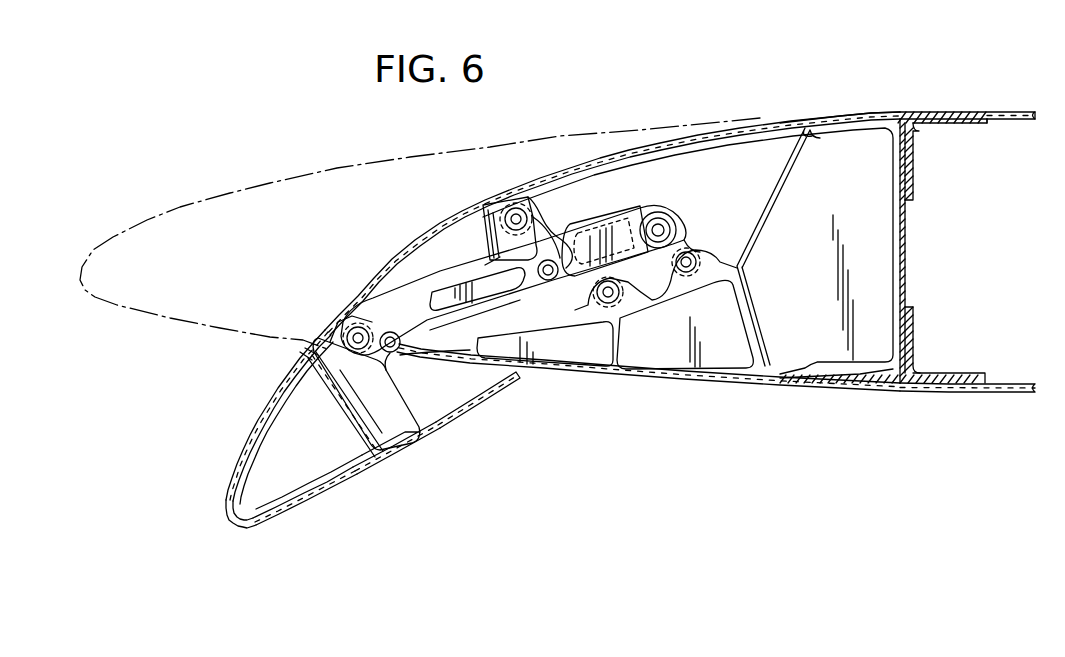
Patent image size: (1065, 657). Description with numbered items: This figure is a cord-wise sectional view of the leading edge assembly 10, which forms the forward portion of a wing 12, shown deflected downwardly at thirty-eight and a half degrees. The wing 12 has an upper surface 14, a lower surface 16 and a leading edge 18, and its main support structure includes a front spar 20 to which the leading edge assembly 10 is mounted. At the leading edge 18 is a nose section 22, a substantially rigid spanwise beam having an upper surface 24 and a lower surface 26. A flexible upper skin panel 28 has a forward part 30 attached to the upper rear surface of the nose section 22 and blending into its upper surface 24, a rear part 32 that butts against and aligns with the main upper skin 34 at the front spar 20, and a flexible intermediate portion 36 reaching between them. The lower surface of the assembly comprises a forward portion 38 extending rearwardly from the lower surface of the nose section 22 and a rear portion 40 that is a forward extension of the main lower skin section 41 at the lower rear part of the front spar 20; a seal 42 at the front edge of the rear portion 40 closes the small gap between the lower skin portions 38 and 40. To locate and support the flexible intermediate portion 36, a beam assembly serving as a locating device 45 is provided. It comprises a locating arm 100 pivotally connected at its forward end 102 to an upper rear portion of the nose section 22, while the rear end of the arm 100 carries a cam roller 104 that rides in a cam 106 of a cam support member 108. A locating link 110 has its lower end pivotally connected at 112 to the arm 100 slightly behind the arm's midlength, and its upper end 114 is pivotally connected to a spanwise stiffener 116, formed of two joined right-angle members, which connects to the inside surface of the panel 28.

The leading edge assembly 10 is at (333, 255).
The wing 12 is at (998, 92).
The upper surface 14 is at (1010, 108).
The lower surface 16 is at (960, 395).
The leading edge 18 is at (235, 519).
The front spar 20 is at (912, 255).
The nose section 22 is at (290, 521).
The upper surface of nose section 24 is at (258, 406).
The lower surface of nose section 26 is at (330, 486).
The flexible upper skin panel 28 is at (397, 252).
The forward part 30 is at (342, 340).
The rear part 32 is at (848, 112).
The main upper skin 34 is at (925, 111).
The flexible intermediate portion 36 is at (560, 165).
The forward portion of lower surface 38 is at (480, 410).
The rear portion of lower surface 40 is at (650, 382).
The main lower skin section 41 is at (985, 393).
The seal 42 is at (402, 352).
The locating device 45 is at (608, 205).
The locating arm 100 is at (445, 268).
The forward end of locating arm 102 is at (352, 328).
The cam roller 104 is at (675, 225).
The cam 106 is at (638, 222).
The cam support member 108 is at (728, 258).
The locating link 110 is at (553, 235).
The pivot connection 112 is at (552, 282).
The upper end of link 114 is at (520, 205).
The spanwise stiffener 116 is at (473, 206).